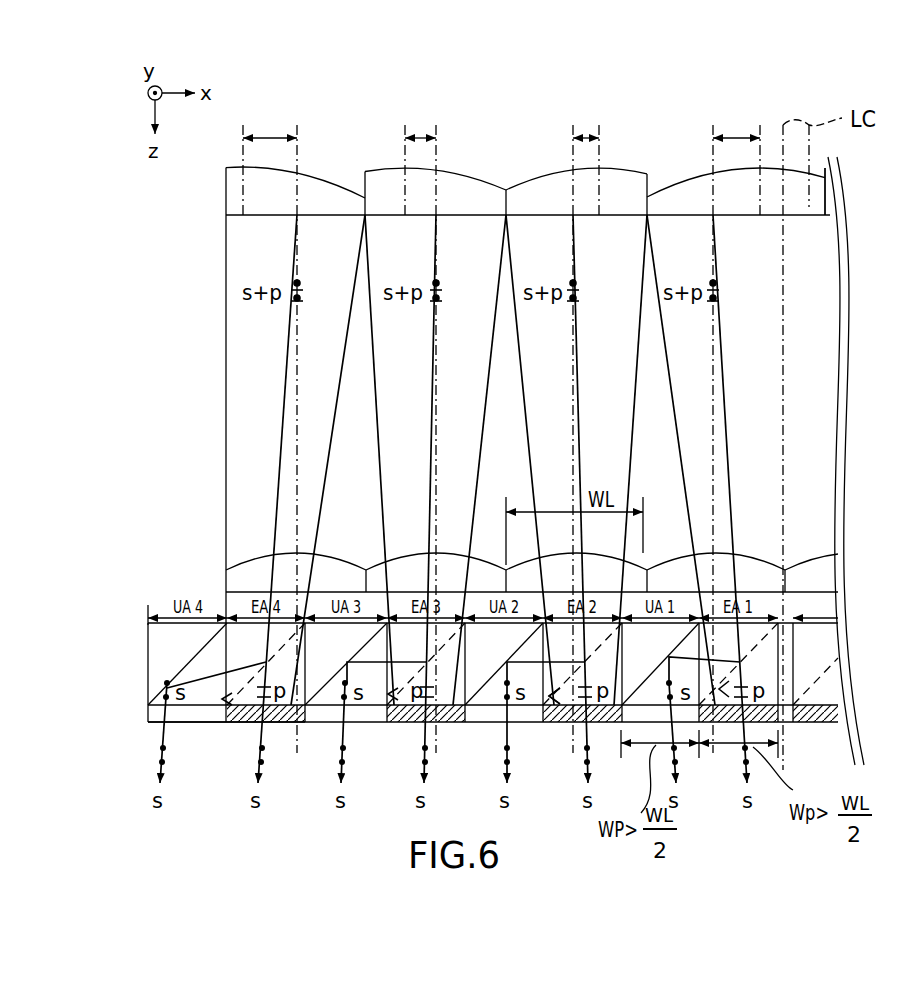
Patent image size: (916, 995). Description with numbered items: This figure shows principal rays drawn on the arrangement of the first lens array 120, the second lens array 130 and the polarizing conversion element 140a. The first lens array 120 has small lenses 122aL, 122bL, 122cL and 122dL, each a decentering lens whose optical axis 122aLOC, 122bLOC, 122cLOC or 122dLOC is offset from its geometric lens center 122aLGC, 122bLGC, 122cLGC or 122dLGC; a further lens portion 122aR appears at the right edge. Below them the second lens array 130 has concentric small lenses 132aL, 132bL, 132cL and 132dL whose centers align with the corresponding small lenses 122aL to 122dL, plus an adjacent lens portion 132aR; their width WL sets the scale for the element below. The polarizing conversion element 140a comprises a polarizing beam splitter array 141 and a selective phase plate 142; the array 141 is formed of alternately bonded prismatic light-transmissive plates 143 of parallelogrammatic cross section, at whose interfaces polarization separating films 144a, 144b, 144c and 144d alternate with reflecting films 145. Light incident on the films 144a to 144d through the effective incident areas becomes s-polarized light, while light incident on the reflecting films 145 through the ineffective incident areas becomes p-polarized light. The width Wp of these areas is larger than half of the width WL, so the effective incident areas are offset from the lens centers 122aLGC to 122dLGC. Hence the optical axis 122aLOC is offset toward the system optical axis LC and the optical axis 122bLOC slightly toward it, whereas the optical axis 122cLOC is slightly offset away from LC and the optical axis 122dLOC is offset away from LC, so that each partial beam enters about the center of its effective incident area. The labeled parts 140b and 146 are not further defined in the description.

The first lens array 120 is at (220, 200).
The small lens 122dL is at (328, 217).
The small lens 122cL is at (393, 217).
The small lens 122bL is at (535, 217).
The small lens 122aL is at (677, 217).
The lens element a right edge 122aR is at (822, 203).
The optical axis 122dLOC is at (243, 125).
The lens center 122dLGC is at (297, 125).
The optical axis 122cLOC is at (405, 125).
The lens center 122cLGC is at (436, 125).
The lens center 122bLGC is at (573, 125).
The optical axis 122bLOC is at (599, 125).
The lens center 122aLGC is at (713, 125).
The optical axis 122aLOC is at (760, 125).
The second lens array 130 is at (218, 586).
The small lens 132dL is at (323, 572).
The small lens 132cL is at (462, 560).
The small lens 132bL is at (597, 567).
The small lens 132aL is at (753, 565).
The lens element right of second array 132aR is at (812, 563).
The polarizing conversion element 140a is at (120, 581).
The polarization conversion element edge 140b is at (824, 740).
The polarizing beam splitter array 141 is at (141, 623).
The selective phase plate 142 is at (148, 713).
The light-transmissive plate 143 is at (533, 698).
The polarization separating film 144a is at (721, 723).
The polarization separating film 144b is at (567, 723).
The polarization separating film 144c is at (381, 722).
The polarization separating film 144d is at (214, 700).
The reflecting film 145 is at (478, 692).
The substrate 146 is at (237, 722).